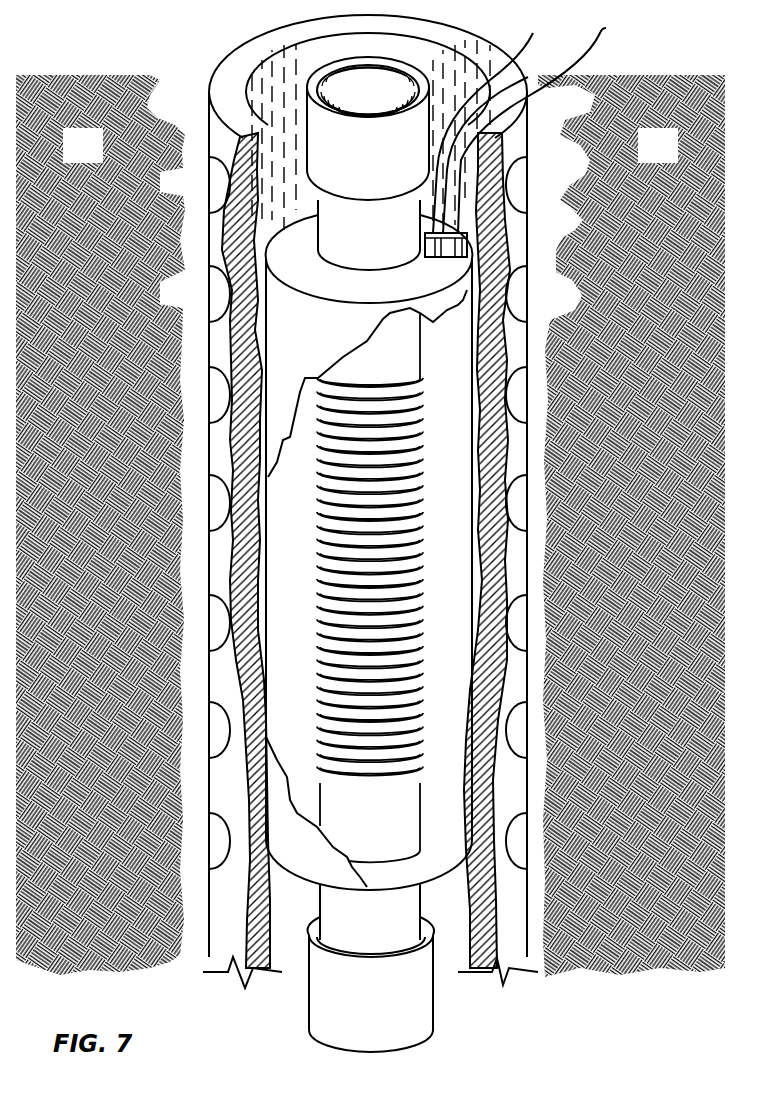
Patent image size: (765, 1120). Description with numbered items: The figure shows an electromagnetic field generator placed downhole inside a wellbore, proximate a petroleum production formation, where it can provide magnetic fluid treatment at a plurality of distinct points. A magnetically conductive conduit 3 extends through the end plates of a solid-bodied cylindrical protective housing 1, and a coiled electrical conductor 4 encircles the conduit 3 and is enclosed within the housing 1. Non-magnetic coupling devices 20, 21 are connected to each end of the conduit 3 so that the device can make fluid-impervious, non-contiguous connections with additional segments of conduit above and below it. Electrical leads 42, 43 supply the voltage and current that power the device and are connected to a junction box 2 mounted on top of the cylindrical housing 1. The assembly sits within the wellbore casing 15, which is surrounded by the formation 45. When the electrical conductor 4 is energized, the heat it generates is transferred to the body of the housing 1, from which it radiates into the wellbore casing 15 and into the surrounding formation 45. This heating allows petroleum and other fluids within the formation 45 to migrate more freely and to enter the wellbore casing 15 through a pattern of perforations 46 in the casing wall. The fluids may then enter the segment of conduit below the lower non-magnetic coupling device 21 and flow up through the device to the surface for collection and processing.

The protective housing 1 is at (292, 339).
The junction box 2 is at (468, 247).
The conduit 3 is at (364, 256).
The electrical conductor 4 is at (362, 397).
The wellbore casing 15 is at (217, 130).
The non-magnetic coupling device 20 is at (382, 167).
The non-magnetic coupling device 21 is at (384, 1011).
The electrical lead 42 is at (533, 33).
The electrical lead 43 is at (606, 28).
The formation 45 is at (95, 159).
The perforations 46 is at (216, 196).